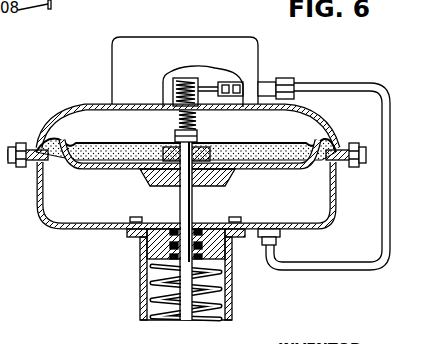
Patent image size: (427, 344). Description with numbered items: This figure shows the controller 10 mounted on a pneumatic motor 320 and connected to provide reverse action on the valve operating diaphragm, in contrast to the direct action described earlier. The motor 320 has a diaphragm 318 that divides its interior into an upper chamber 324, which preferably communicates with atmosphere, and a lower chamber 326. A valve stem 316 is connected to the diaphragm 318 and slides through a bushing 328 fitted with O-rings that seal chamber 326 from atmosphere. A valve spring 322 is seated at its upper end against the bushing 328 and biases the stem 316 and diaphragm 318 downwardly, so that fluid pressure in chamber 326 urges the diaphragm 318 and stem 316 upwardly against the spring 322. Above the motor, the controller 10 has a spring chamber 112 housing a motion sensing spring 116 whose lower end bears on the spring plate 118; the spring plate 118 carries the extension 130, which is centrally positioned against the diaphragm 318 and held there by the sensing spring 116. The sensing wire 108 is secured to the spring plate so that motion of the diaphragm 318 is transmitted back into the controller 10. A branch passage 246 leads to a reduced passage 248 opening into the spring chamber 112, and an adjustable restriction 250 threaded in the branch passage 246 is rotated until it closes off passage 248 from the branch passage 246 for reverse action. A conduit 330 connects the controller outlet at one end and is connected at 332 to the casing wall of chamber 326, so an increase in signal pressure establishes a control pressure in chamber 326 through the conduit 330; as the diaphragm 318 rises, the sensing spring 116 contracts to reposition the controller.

The controller 10 is at (104, 49).
The sensing wire 108 is at (194, 129).
The spring chamber 112 is at (172, 91).
The motion sensing spring 116 is at (178, 117).
The spring plate flange 118 is at (176, 139).
The extension plate 130 is at (212, 143).
The branch passage 246 is at (245, 80).
The passage 248 is at (222, 86).
The adjustable valve 250 is at (232, 85).
The valve stem 316 is at (153, 289).
The diaphragm 318 is at (77, 144).
The pneumatic motor 320 is at (40, 135).
The valve spring 322 is at (226, 290).
The chamber 324 is at (92, 115).
The chamber 326 is at (86, 212).
The bushing 328 is at (217, 229).
The conduit 330 is at (352, 84).
The conduit connection 332 is at (282, 232).